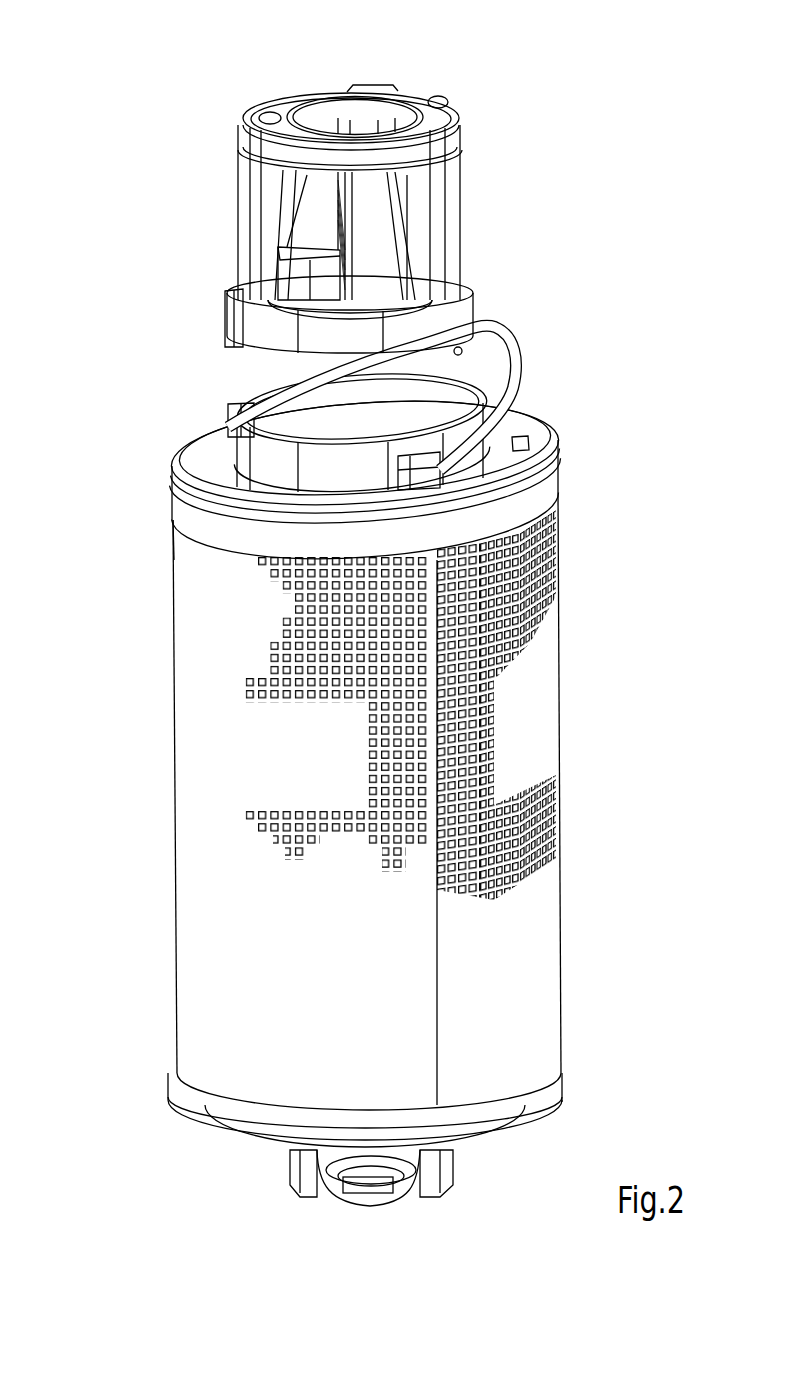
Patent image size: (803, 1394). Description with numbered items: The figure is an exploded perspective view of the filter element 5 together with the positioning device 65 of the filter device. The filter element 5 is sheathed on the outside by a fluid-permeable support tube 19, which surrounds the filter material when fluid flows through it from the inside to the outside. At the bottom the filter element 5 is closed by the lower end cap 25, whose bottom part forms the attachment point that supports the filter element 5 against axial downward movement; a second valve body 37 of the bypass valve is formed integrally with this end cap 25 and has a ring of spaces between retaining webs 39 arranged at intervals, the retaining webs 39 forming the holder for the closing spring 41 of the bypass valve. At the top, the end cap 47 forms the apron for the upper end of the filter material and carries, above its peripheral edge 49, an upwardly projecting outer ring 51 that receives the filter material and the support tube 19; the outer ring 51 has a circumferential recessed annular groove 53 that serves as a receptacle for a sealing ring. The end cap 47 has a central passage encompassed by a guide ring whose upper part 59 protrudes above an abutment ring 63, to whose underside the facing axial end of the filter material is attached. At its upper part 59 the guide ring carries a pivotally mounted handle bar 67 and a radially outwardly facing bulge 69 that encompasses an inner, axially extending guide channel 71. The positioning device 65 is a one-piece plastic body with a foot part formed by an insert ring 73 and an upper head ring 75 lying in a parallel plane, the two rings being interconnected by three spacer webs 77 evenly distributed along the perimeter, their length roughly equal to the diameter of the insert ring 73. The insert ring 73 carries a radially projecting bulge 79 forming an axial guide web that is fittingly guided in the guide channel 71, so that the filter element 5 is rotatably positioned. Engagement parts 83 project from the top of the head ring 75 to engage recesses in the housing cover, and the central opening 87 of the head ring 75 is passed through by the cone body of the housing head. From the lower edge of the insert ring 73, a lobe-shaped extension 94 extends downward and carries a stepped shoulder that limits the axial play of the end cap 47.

The filter element 5 is at (561, 960).
The support tube 19 is at (506, 668).
The end cap 25 is at (537, 1098).
The second valve body 37 is at (437, 1152).
The retaining webs 39 is at (296, 1177).
The closing spring 41 is at (373, 1165).
The end cap 47 is at (568, 500).
The peripheral edge 49 is at (232, 527).
The outer ring 51 is at (560, 440).
The annular groove 53 is at (167, 497).
The upper part 59 is at (462, 432).
The abutment ring 63 is at (526, 440).
The positioning device 65 is at (513, 232).
The handle bar 67 is at (522, 356).
The bulge 69 is at (199, 421).
The guide channel 71 is at (233, 420).
The insert ring 73 is at (460, 314).
The head ring 75 is at (321, 108).
The spacer webs 77 is at (242, 200).
The bulge 79 is at (222, 303).
The engagement parts 83 is at (268, 114).
The central opening 87 is at (336, 115).
The lobe-shaped extension 94 is at (462, 356).